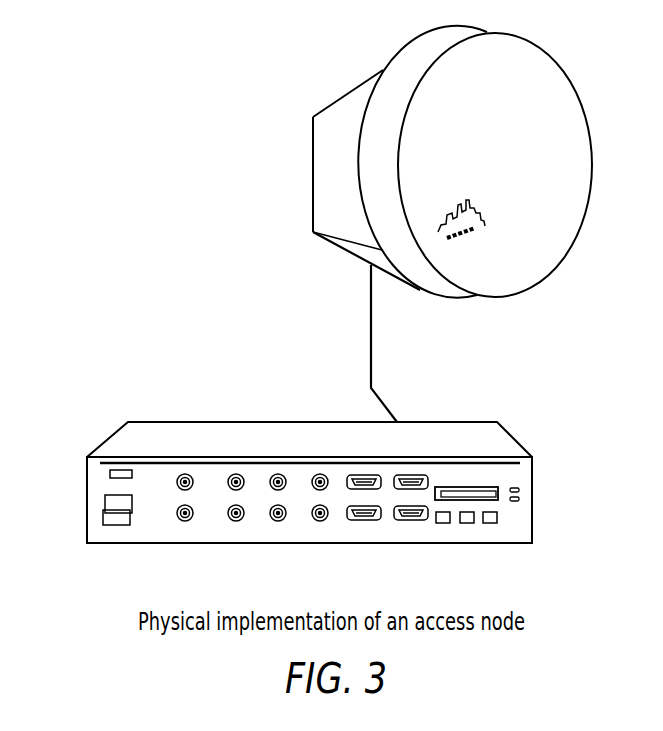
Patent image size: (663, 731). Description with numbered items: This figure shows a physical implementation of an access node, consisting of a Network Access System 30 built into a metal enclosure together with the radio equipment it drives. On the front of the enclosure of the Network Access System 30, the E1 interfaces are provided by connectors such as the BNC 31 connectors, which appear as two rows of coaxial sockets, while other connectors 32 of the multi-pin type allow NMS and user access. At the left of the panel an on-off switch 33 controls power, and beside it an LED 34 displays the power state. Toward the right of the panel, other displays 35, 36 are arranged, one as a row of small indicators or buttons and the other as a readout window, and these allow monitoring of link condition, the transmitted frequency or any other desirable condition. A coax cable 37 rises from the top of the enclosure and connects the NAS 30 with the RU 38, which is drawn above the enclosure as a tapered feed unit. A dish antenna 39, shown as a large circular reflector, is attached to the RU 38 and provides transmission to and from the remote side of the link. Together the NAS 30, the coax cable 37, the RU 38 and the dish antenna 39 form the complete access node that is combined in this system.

The Network Access System 30 is at (250, 422).
The BNC connector 31 is at (180, 472).
The other connectors 32 is at (411, 476).
The on-off switch 33 is at (105, 518).
The LED 34 is at (110, 475).
The display 35 is at (497, 523).
The display 36 is at (498, 488).
The coax cable 37 is at (371, 333).
The RU 38 is at (342, 105).
The dish antenna 39 is at (571, 95).